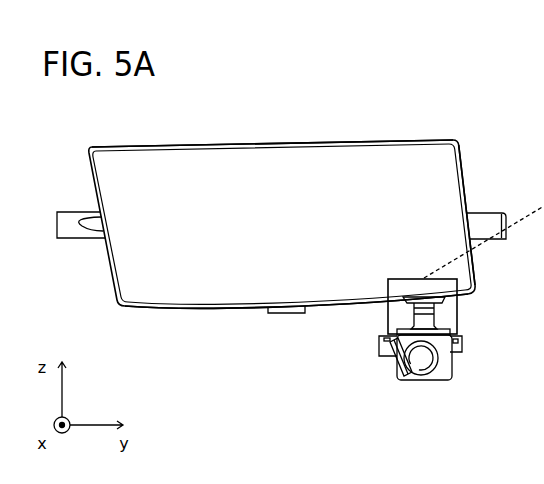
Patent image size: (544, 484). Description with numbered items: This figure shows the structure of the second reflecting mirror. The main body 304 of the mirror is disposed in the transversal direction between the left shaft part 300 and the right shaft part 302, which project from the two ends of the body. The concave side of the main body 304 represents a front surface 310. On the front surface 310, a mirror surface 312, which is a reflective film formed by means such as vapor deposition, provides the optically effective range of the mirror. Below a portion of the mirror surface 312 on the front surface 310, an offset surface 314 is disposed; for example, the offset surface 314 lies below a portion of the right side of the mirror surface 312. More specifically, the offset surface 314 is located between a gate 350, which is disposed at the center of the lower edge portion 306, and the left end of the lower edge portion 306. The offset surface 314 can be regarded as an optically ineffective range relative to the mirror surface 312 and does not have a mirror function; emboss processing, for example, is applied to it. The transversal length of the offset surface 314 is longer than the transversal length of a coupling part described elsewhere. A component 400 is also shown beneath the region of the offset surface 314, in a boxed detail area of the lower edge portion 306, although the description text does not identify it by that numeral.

The left shaft part 300 is at (80, 239).
The right shaft part 302 is at (486, 211).
The main body 304 is at (295, 143).
The lower edge portion 306 is at (352, 302).
The front surface 310 is at (410, 167).
The mirror surface 312 is at (228, 200).
The offset surface 314 is at (437, 308).
The gate 350 is at (287, 313).
The connector 400 is at (438, 320).